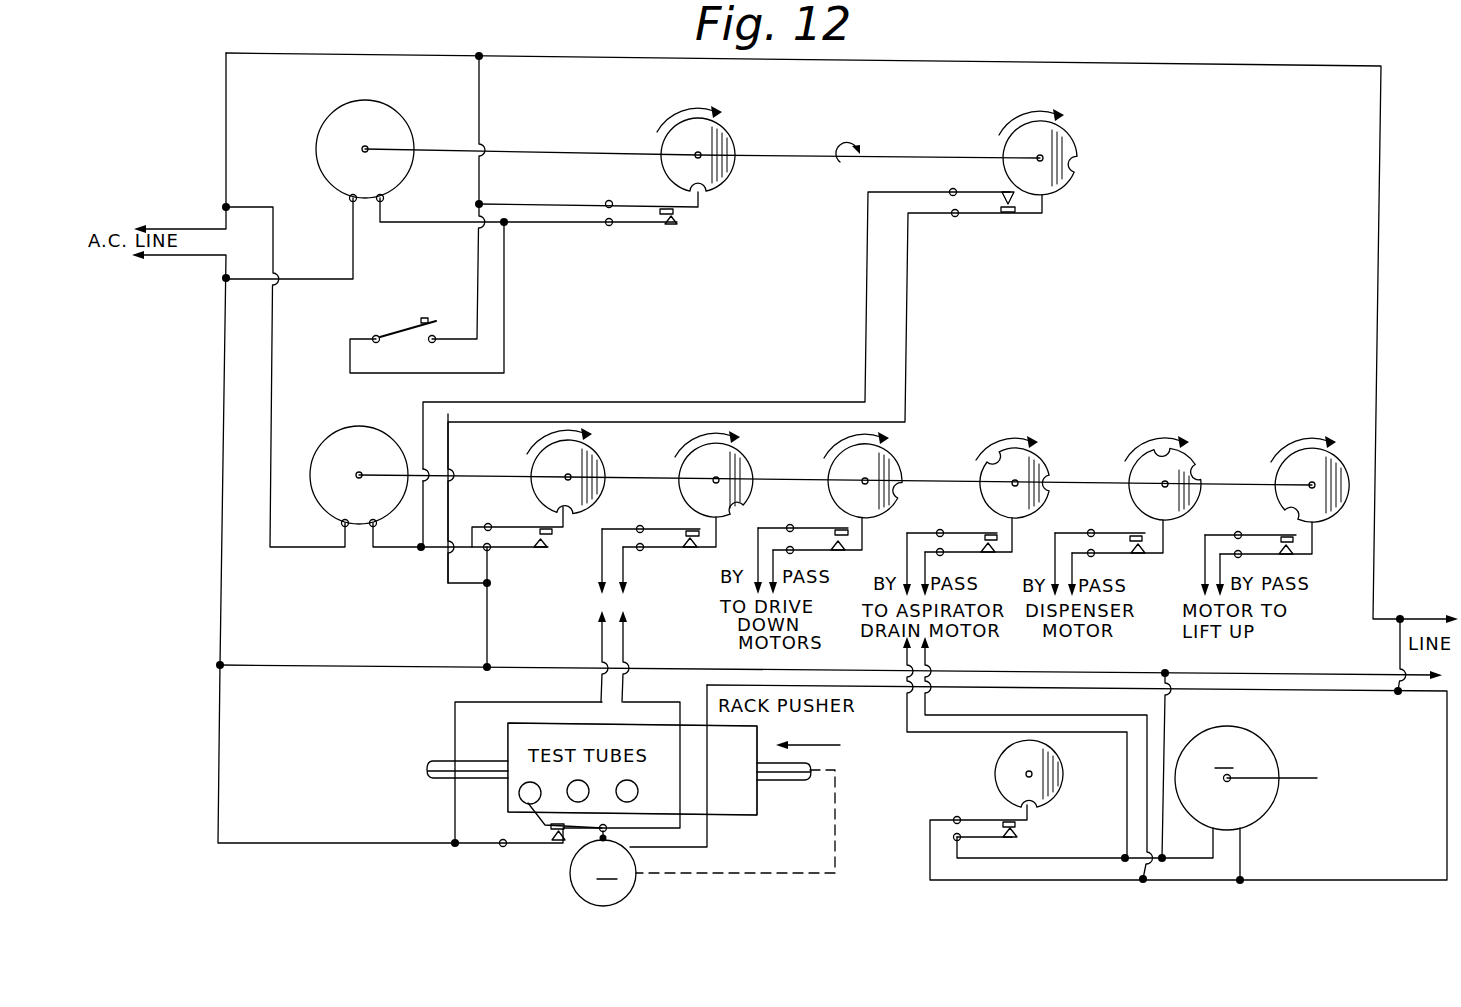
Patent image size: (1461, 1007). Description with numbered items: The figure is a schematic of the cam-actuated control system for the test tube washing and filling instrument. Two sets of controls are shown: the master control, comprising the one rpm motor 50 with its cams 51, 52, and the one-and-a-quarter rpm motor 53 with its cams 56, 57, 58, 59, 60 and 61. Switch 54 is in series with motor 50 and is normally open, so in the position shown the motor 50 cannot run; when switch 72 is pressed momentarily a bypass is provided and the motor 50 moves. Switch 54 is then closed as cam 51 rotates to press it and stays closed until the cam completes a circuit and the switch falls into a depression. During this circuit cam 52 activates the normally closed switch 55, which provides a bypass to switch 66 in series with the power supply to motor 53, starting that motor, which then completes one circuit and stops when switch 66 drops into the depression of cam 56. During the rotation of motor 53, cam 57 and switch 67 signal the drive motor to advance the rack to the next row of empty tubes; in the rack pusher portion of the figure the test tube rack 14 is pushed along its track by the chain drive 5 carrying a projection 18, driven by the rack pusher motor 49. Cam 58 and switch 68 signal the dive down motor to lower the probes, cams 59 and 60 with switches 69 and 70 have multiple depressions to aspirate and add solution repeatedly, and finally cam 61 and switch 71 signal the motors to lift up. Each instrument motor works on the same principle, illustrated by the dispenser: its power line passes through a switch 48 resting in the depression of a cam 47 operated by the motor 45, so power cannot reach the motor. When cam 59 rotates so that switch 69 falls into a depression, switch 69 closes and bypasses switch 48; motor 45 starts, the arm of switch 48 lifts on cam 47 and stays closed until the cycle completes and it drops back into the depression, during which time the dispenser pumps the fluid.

The 1 rpm motor 50 is at (397, 122).
The cam 51 is at (718, 132).
The cam 52 is at (1064, 143).
The 1¼ rpm motor 53 is at (380, 428).
The switch 54 is at (655, 226).
The switch 55 is at (1012, 222).
The cam 56 is at (600, 466).
The cam 57 is at (750, 466).
The cam 58 is at (893, 468).
The cam 59 is at (1045, 462).
The cam 60 is at (1195, 470).
The cam 61 is at (1330, 465).
The switch 66 is at (515, 545).
The switch 67 is at (681, 543).
The switch 68 is at (820, 540).
The switch 69 is at (958, 542).
The switch 70 is at (1122, 541).
The switch 71 is at (1272, 541).
The switch 72 is at (393, 333).
The test tube rack 14 is at (530, 733).
The chain drive 5 is at (440, 768).
The projection 18 is at (768, 780).
The rack pusher motor 49 is at (630, 886).
The cam 47 is at (1005, 766).
The switch 48 is at (1018, 826).
The motor 45 is at (1260, 812).